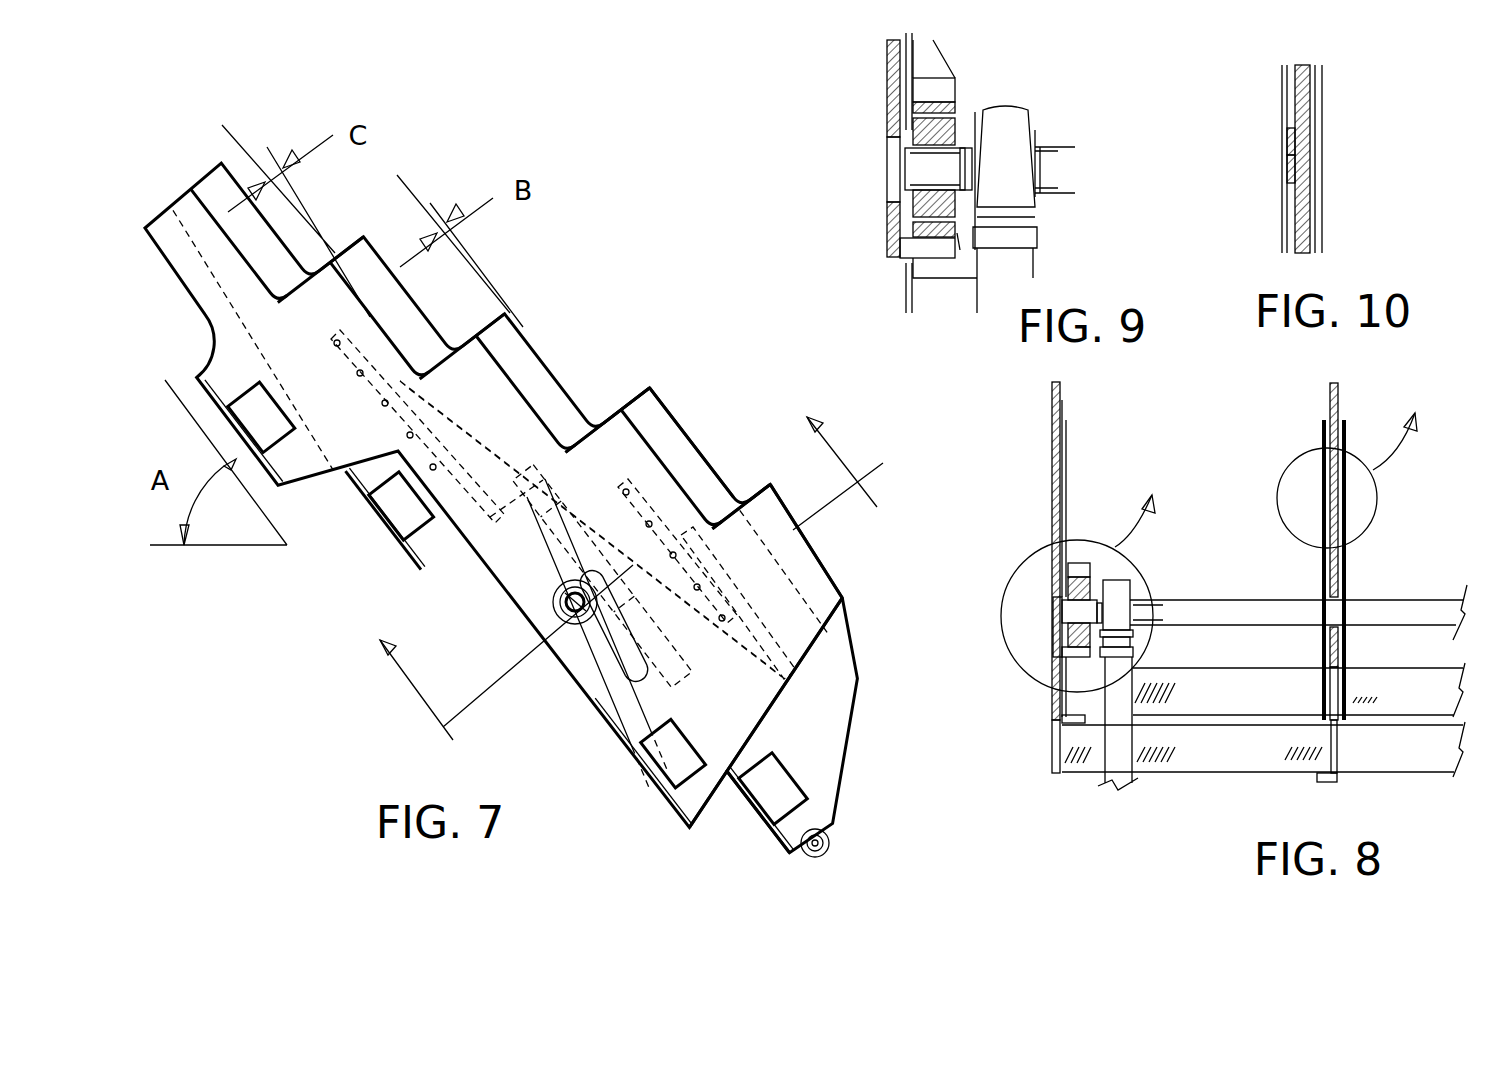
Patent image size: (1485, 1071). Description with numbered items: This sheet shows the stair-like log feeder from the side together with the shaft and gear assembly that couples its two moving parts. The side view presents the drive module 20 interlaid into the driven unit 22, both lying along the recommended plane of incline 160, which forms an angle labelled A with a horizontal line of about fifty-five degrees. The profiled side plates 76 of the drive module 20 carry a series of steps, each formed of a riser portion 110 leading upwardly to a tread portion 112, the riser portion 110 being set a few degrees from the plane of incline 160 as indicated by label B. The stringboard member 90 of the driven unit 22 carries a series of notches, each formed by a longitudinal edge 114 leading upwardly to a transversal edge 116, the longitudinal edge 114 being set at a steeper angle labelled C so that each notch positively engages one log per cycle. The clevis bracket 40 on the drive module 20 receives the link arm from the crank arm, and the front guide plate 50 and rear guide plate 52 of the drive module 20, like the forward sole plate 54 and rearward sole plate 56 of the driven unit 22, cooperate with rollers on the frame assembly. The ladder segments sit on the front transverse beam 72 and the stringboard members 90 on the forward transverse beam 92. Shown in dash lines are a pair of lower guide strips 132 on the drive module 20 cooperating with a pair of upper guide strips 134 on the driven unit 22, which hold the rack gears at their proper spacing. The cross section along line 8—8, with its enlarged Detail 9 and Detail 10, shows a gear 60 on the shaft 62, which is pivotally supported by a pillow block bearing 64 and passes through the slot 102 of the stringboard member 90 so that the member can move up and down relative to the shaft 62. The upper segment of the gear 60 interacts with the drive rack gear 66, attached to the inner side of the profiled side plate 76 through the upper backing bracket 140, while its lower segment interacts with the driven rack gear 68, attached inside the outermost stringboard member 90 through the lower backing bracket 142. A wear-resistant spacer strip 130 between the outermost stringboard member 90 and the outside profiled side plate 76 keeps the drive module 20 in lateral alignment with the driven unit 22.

In FIG. 7, the drive module 20 is at (847, 767).
In FIG. 7, the driven unit 22 is at (783, 693).
In FIG. 7, the clevis bracket 40 is at (823, 845).
In FIG. 8, the front guide plate 50 is at (1075, 722).
In FIG. 7, the rear guide plate 52 is at (763, 820).
In FIG. 8, the forward sole plate 54 is at (1330, 783).
In FIG. 7, the rearward sole plate 56 is at (650, 780).
In FIG. 7, the gear 60 is at (590, 637).
In FIG. 9, the gear 60 is at (917, 140).
In FIG. 8, the gear 60 is at (1065, 630).
In FIG. 9, the shaft 62 is at (1062, 145).
In FIG. 8, the shaft 62 is at (1261, 608).
In FIG. 9, the pillow block bearing 64 is at (1013, 120).
In FIG. 8, the pillow block bearing 64 is at (1123, 583).
In FIG. 7, the drive rack gear 66 is at (552, 532).
In FIG. 9, the drive rack gear 66 is at (957, 105).
In FIG. 8, the drive rack gear 66 is at (1080, 563).
In FIG. 7, the driven rack gear 68 is at (593, 697).
In FIG. 9, the driven rack gear 68 is at (957, 233).
In FIG. 8, the driven rack gear 68 is at (1062, 682).
In FIG. 7, the front transverse beam 72 is at (398, 517).
In FIG. 8, the front transverse beam 72 is at (1255, 690).
In FIG. 10, the profiled side plate 76 is at (1283, 93).
In FIG. 8, the profiled side plate 76 is at (1065, 443).
In FIG. 9, the stringboard member 90 is at (890, 233).
In FIG. 10, the stringboard member 90 is at (1303, 87).
In FIG. 8, the stringboard member 90 is at (1052, 423).
In FIG. 7, the forward transverse beam 92 is at (262, 428).
In FIG. 8, the forward transverse beam 92 is at (1212, 747).
In FIG. 9, the slot 102 is at (890, 182).
In FIG. 7, the riser portion 110 is at (677, 420).
In FIG. 7, the tread portion 112 is at (635, 400).
In FIG. 7, the longitudinal edge 114 is at (815, 548).
In FIG. 7, the transversal edge 116 is at (757, 497).
In FIG. 8, the spacer strip 130 is at (1062, 408).
In FIG. 7, the lower guide strip 132 is at (348, 363).
In FIG. 10, the lower guide strip 132 is at (1288, 173).
In FIG. 7, the upper guide strip 134 is at (450, 453).
In FIG. 10, the upper guide strip 134 is at (1290, 145).
In FIG. 9, the upper backing bracket 140 is at (933, 90).
In FIG. 9, the lower backing bracket 142 is at (913, 267).
In FIG. 7, the plane of incline 160 is at (230, 138).
In FIG. 7, the section line 8— 8 is at (609, 555).
In FIG. 8, the Detail 9 is at (1086, 576).
In FIG. 8, the Detail 10 is at (1358, 462).